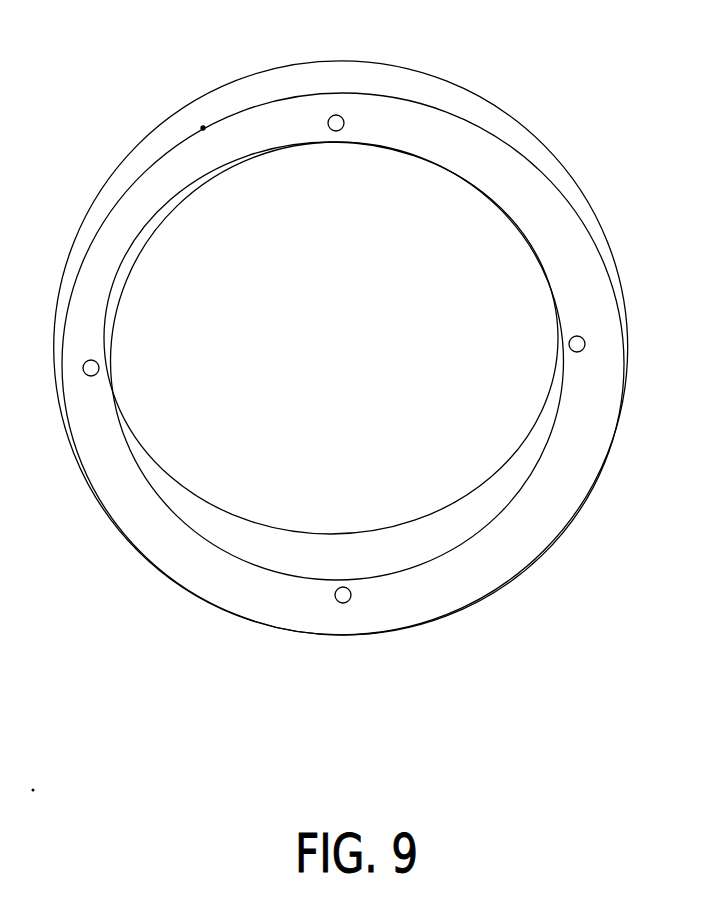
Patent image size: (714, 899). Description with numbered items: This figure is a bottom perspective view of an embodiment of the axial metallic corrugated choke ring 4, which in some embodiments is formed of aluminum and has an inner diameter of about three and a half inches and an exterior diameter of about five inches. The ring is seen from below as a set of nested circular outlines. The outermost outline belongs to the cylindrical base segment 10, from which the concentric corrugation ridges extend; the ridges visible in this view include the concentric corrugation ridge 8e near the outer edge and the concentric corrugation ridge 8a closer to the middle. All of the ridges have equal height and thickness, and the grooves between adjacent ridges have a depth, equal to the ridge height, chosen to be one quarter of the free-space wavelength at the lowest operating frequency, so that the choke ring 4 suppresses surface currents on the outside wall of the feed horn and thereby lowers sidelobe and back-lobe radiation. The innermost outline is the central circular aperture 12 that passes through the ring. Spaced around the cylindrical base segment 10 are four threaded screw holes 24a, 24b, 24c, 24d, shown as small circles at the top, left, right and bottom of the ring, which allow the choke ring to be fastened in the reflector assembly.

The axial metallic corrugated choke ring 4 is at (341, 343).
The concentric corrugation ridge 8a is at (328, 540).
The concentric corrugation ridge 8e is at (257, 73).
The cylindrical base segment 10 is at (423, 602).
The central circular aperture 12 is at (318, 362).
The threaded screw hole 24a is at (99, 369).
The threaded screw hole 24b is at (337, 131).
The threaded screw hole 24c is at (571, 338).
The threaded screw hole 24d is at (341, 604).